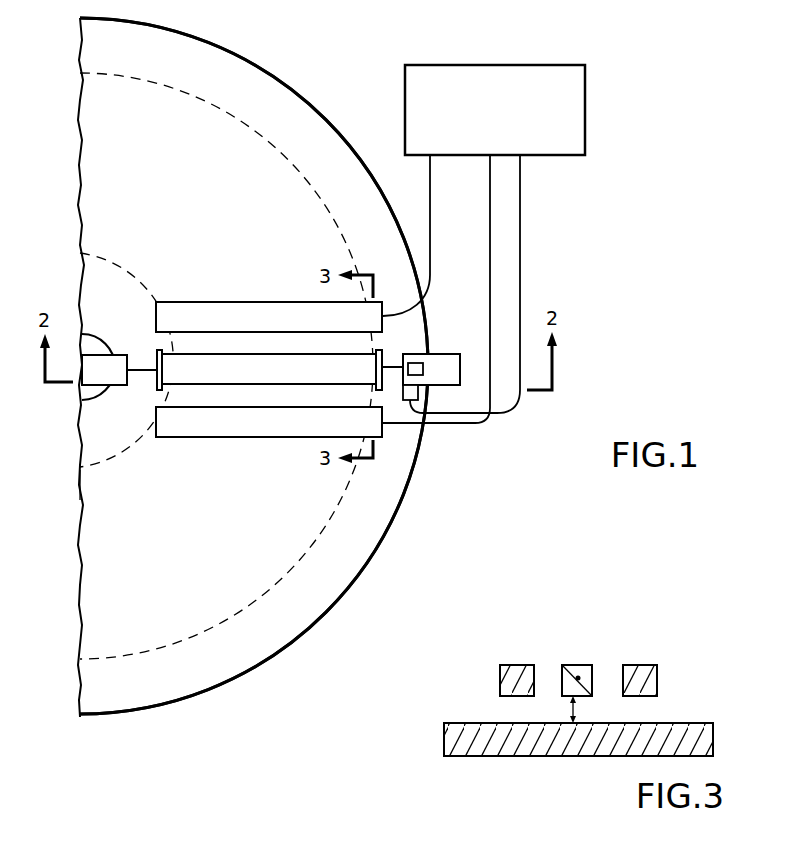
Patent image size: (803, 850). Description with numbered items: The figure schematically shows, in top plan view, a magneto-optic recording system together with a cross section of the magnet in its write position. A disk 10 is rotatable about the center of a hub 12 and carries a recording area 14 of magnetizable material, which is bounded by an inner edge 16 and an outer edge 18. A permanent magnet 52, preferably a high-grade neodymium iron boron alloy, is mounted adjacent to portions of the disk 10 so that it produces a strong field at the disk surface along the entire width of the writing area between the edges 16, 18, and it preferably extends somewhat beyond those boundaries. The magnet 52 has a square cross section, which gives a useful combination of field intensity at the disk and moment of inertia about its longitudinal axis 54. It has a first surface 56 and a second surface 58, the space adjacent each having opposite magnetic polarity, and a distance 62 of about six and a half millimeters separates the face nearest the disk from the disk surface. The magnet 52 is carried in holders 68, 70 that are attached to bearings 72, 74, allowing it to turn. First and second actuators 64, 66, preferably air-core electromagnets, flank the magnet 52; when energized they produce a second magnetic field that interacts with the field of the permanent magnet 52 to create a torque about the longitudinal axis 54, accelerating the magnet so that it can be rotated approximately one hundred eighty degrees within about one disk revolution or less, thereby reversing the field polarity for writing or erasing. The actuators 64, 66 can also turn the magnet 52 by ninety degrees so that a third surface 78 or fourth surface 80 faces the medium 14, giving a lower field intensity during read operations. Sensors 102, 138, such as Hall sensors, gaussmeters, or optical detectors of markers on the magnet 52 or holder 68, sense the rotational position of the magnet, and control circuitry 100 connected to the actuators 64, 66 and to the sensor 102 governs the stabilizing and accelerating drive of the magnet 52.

In FIG. 1, the disk 10 is at (290, 85).
In FIG. 3, the disk 10 is at (444, 742).
In FIG. 1, the hub 12 is at (82, 395).
In FIG. 1, the recording area 14 is at (147, 115).
In FIG. 3, the recording area 14 is at (555, 728).
In FIG. 1, the inner edge 16 is at (80, 483).
In FIG. 1, the outer edge 18 is at (223, 618).
In FIG. 1, the permanent magnet 52 is at (245, 367).
In FIG. 3, the permanent magnet 52 is at (577, 665).
In FIG. 3, the longitudinal axis 54 is at (580, 677).
In FIG. 3, the first surface 56 is at (573, 670).
In FIG. 3, the second surface 58 is at (582, 692).
In FIG. 3, the distance 62 is at (571, 708).
In FIG. 1, the first actuator 64 is at (288, 310).
In FIG. 3, the first actuator 64 is at (657, 680).
In FIG. 1, the second actuator 66 is at (372, 422).
In FIG. 3, the second actuator 66 is at (498, 680).
In FIG. 1, the holder 68 is at (421, 318).
In FIG. 1, the holder 70 is at (95, 289).
In FIG. 1, the bearing 72 is at (447, 377).
In FIG. 1, the bearing 74 is at (93, 363).
In FIG. 3, the third surface 78 is at (562, 677).
In FIG. 3, the fourth surface 80 is at (593, 677).
In FIG. 1, the control circuitry 100 is at (572, 92).
In FIG. 1, the sensor 102 is at (416, 362).
In FIG. 1, the sensor 138 is at (420, 405).